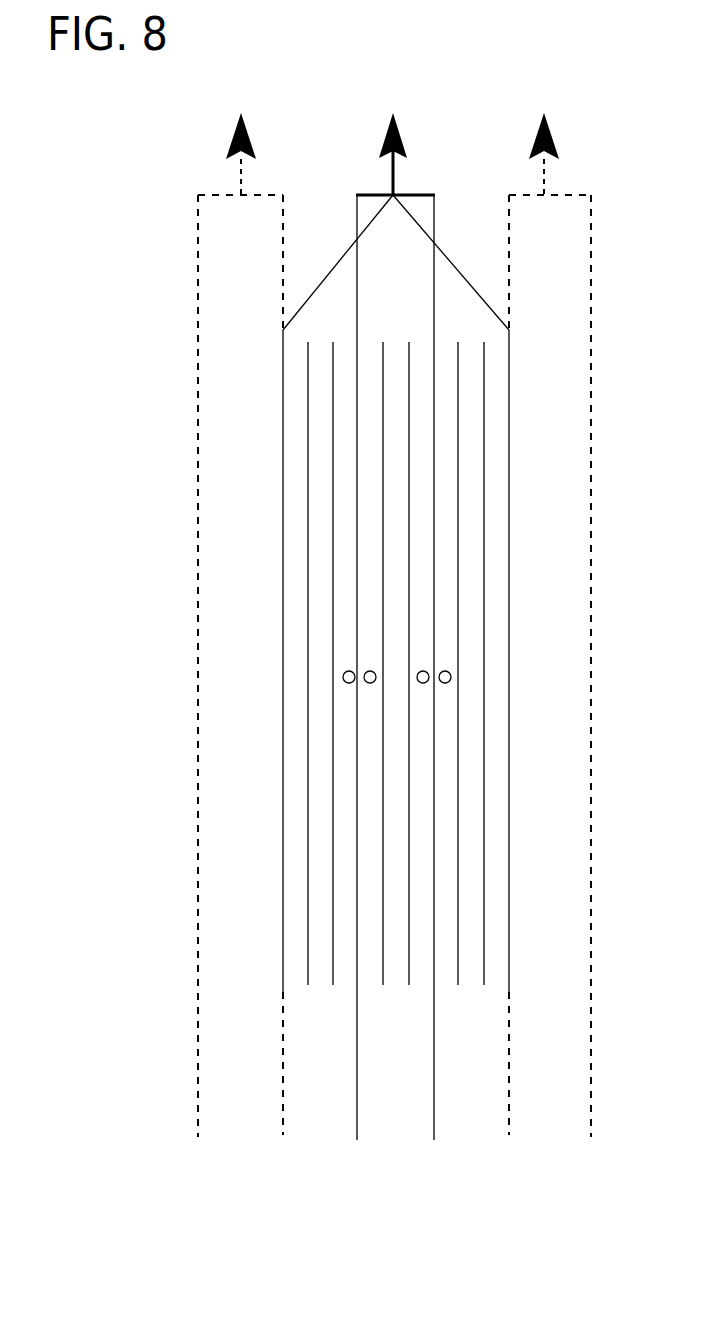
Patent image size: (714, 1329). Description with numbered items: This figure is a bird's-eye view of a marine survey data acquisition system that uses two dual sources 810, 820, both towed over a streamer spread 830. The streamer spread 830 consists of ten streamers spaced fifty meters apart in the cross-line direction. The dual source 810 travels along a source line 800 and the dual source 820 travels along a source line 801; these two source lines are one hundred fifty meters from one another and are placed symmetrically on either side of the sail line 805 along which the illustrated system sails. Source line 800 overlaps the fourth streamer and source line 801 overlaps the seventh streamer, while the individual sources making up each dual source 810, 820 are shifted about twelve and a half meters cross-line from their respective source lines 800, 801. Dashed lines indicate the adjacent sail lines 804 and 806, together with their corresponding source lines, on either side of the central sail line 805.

The source line 800 is at (357, 205).
The source line 801 is at (435, 207).
The sail line 804 is at (248, 134).
The sail line 805 is at (398, 135).
The sail line 806 is at (550, 134).
The dual source 810 is at (359, 684).
The dual source 820 is at (437, 681).
The streamer spread 830 is at (313, 598).